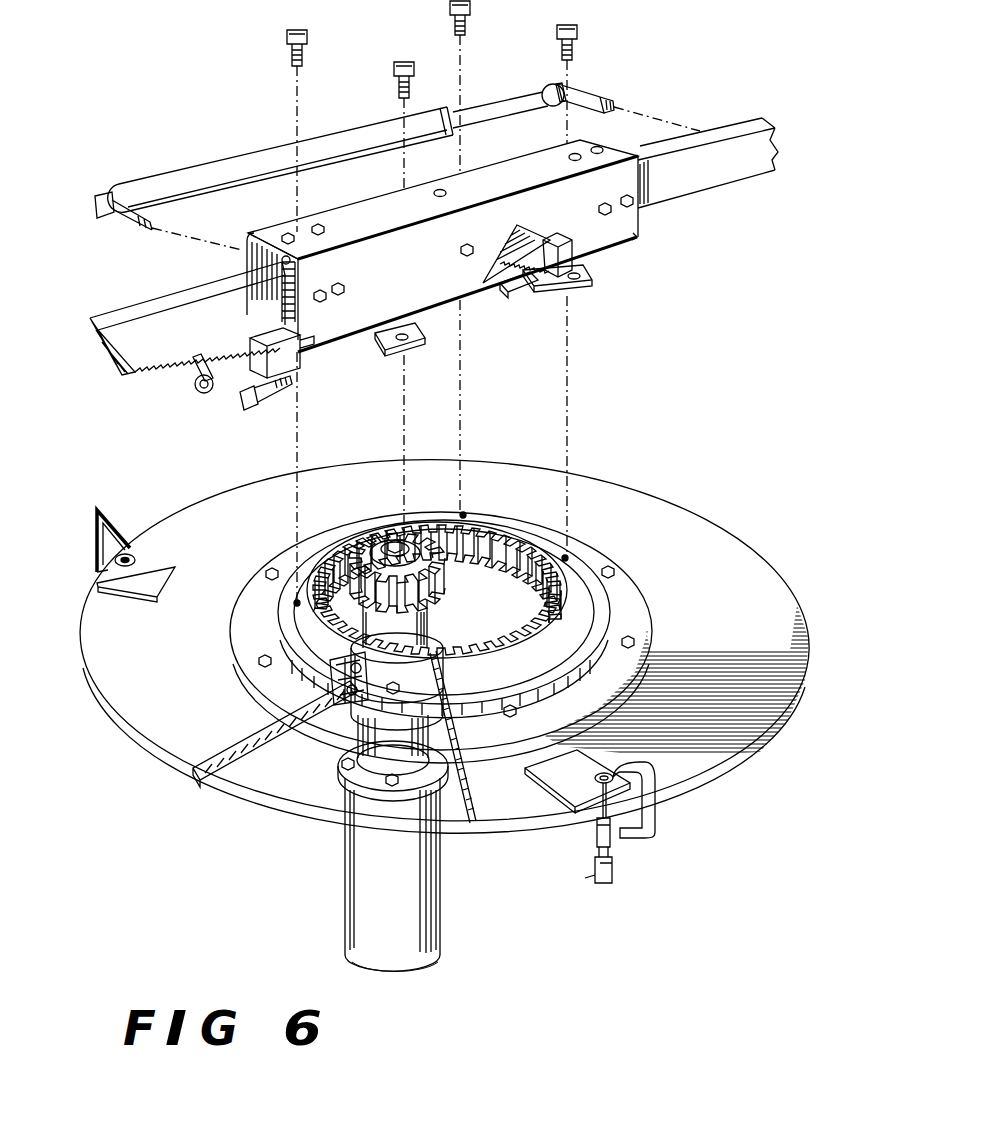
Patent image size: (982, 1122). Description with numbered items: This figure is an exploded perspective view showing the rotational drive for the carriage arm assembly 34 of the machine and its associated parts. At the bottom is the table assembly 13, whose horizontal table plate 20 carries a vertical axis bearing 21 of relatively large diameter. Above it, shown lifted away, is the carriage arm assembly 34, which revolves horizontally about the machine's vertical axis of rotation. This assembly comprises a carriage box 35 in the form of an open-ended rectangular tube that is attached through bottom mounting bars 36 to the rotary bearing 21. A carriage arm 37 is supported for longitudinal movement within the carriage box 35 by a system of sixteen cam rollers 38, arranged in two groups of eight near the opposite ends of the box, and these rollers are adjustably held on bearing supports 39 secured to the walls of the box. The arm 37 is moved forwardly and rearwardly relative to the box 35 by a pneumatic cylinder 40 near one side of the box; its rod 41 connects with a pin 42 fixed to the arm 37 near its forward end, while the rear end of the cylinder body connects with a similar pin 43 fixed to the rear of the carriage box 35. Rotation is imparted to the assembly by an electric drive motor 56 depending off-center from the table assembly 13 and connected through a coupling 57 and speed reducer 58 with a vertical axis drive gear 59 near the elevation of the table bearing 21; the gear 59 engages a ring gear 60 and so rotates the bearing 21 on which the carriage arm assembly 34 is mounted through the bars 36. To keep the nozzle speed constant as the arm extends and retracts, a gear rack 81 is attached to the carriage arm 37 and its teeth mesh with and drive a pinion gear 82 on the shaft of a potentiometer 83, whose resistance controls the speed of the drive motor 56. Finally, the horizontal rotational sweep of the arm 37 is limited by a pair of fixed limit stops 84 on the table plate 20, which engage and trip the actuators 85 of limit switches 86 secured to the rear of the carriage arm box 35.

The table assembly 13 is at (707, 515).
The horizontal table plate 20 is at (637, 493).
The vertical axis bearing 21 is at (320, 665).
The carriage arm assembly 34 is at (365, 213).
The carriage box 35 is at (634, 241).
The bottom mounting bars 36 is at (577, 292).
The carriage arm 37 is at (692, 180).
The cam rollers 38 is at (282, 272).
The bearing supports 39 is at (246, 255).
The pneumatic cylinder 40 is at (237, 165).
The rod 41 is at (514, 103).
The pin 42 is at (587, 98).
The pin 43 is at (115, 216).
The electric drive motor 56 is at (350, 870).
The coupling 57 is at (348, 742).
The speed reducer 58 is at (420, 625).
The vertical axis drive gear 59 is at (440, 569).
The ring gear 60 is at (547, 576).
The gear rack 81 is at (485, 263).
The pinion gear 82 is at (518, 281).
The potentiometer 83 is at (580, 256).
The fixed limit stops 84 is at (140, 590).
The actuators 85 is at (200, 383).
The limit switches 86 is at (292, 364).